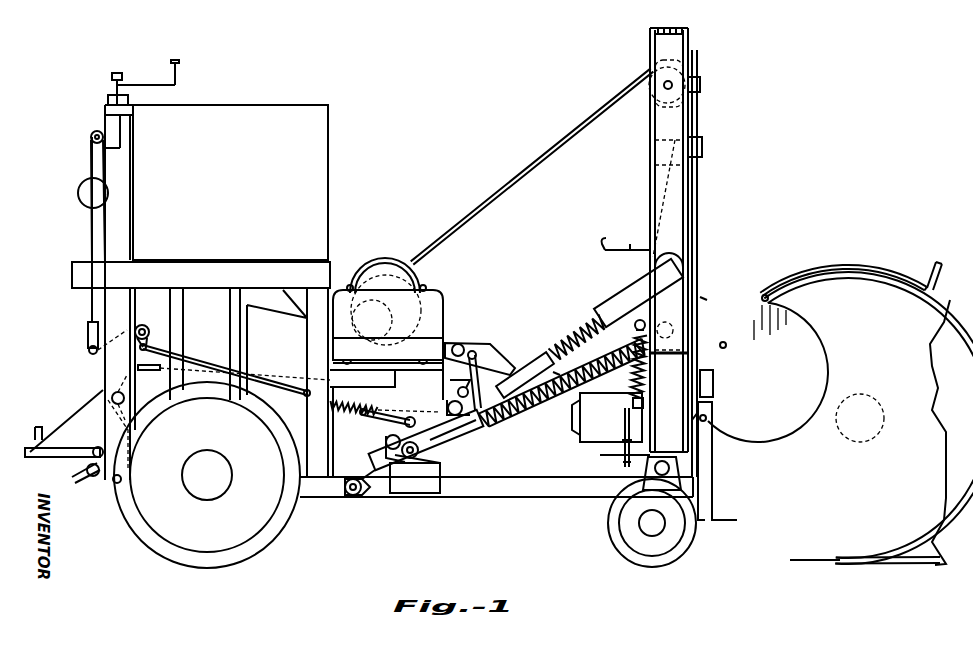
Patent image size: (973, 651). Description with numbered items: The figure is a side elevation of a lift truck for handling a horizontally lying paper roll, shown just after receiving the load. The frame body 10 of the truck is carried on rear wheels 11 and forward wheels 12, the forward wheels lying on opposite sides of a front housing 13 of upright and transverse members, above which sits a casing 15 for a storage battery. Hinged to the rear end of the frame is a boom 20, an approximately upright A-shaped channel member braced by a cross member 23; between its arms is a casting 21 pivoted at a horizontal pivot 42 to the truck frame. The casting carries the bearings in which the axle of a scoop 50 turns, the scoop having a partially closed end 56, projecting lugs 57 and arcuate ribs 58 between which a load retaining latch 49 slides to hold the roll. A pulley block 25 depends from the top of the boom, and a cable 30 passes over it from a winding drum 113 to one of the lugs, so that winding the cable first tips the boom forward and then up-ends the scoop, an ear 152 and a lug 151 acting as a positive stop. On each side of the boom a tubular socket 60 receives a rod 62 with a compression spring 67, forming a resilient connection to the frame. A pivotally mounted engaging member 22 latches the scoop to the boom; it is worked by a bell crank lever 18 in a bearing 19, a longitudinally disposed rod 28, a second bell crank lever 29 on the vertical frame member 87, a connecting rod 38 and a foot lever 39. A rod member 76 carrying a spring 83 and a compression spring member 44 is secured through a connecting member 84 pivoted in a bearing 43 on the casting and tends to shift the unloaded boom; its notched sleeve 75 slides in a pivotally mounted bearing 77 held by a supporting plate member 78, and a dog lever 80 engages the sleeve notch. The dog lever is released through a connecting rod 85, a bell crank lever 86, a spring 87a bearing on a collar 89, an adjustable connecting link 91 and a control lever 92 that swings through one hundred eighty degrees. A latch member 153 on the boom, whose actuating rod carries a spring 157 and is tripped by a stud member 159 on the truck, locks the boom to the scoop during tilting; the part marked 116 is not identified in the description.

The frame body 10 is at (528, 490).
The rear wheels 11 is at (620, 525).
The forward wheels 12 is at (247, 525).
The front housing 13 is at (229, 384).
The casing 15 is at (230, 182).
The bell crank lever 18 is at (458, 430).
The bearing 19 is at (463, 383).
The boom 20 is at (652, 175).
The casting 21 is at (607, 417).
The engaging member 22 is at (483, 347).
The cross member 23 is at (612, 231).
The pulley block 25 is at (648, 97).
The longitudinally disposed rod 28 is at (285, 378).
The bell crank lever 29 is at (142, 372).
The cable 30 is at (555, 133).
The connecting rod 38 is at (117, 440).
The foot lever 39 is at (82, 468).
The pivot 42 is at (648, 470).
The bearing 43 is at (713, 298).
The compression spring member 44 is at (562, 384).
The load retaining latch 49 is at (885, 272).
The scoop 50 is at (782, 533).
The partially closed end 56 is at (808, 350).
The projecting lugs 57 is at (717, 520).
The arcuate ribs 58 is at (800, 562).
The tubular sockets 60 is at (622, 296).
The rods 62 is at (525, 372).
The compression springs 67 is at (578, 330).
The notched sleeve 75 is at (452, 443).
The rod member 76 is at (560, 380).
The bearing 77 is at (445, 468).
The supporting plate member 78 is at (423, 485).
The dog lever 80 is at (386, 440).
The spring 83 is at (622, 364).
The connecting member 84 is at (634, 323).
The connecting rod 85 is at (278, 388).
The bell crank lever 86 is at (142, 325).
The vertical frame member 87 is at (107, 368).
The spring 87a is at (386, 402).
The collar 89 is at (363, 415).
The adjustable connecting link 91 is at (88, 237).
The control lever 92 is at (78, 192).
The winding drum 113 is at (382, 302).
The rod 116 is at (607, 453).
The lug 151 is at (703, 152).
The ear 152 is at (706, 365).
The latch member 153 is at (700, 138).
The spring 157 is at (633, 385).
The stud member 159 is at (622, 460).